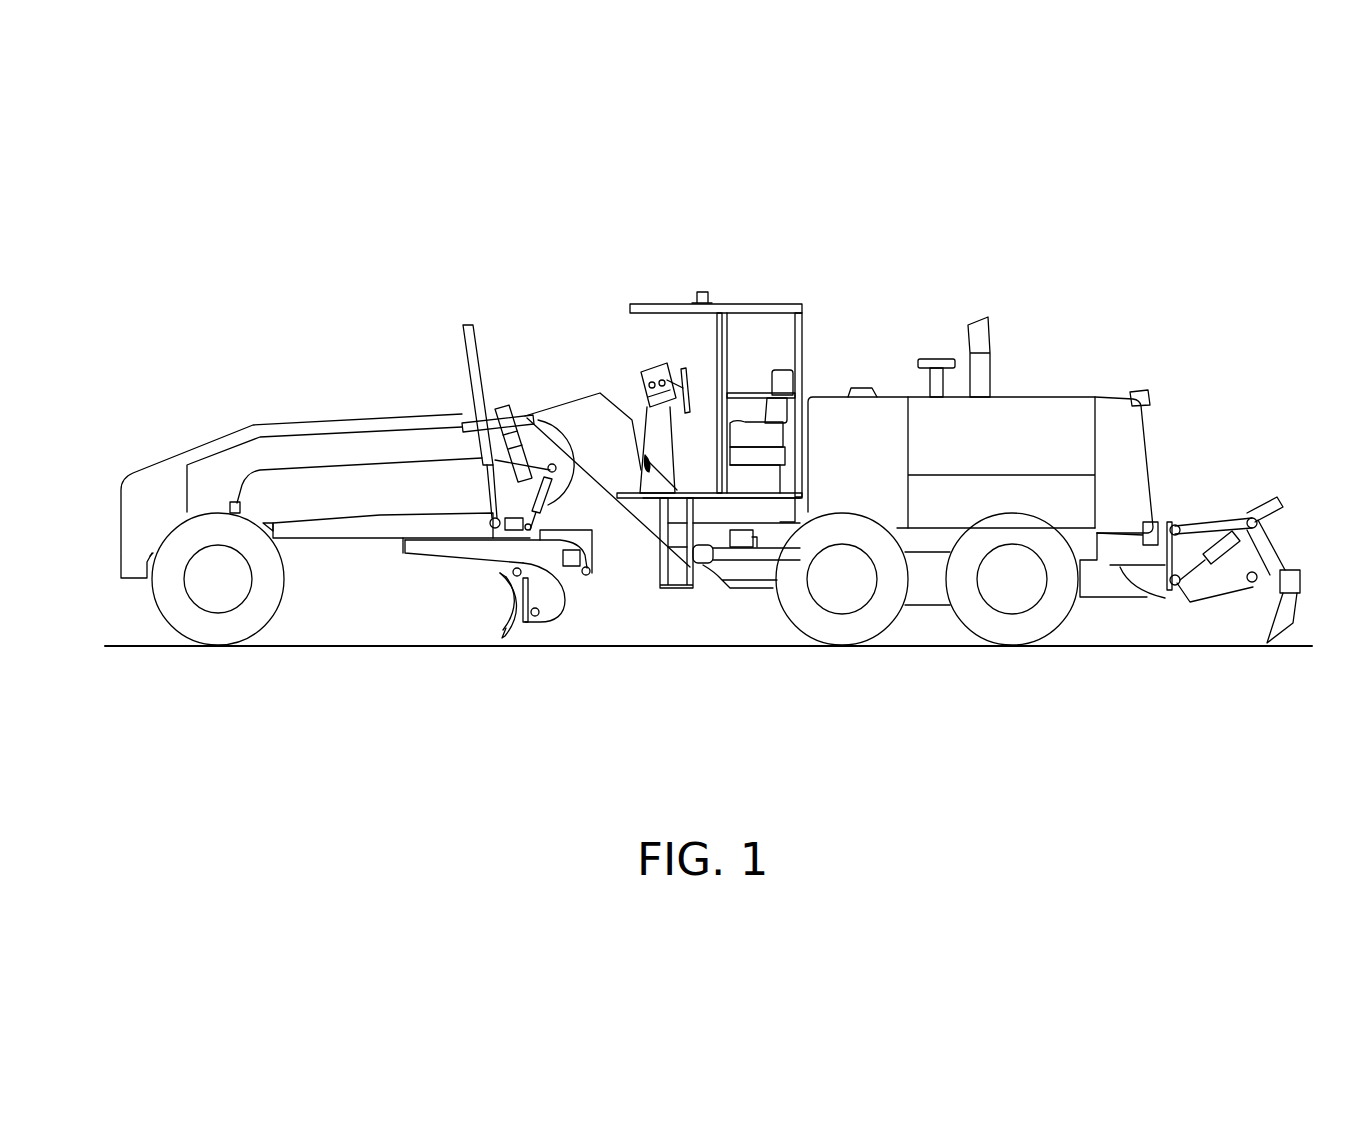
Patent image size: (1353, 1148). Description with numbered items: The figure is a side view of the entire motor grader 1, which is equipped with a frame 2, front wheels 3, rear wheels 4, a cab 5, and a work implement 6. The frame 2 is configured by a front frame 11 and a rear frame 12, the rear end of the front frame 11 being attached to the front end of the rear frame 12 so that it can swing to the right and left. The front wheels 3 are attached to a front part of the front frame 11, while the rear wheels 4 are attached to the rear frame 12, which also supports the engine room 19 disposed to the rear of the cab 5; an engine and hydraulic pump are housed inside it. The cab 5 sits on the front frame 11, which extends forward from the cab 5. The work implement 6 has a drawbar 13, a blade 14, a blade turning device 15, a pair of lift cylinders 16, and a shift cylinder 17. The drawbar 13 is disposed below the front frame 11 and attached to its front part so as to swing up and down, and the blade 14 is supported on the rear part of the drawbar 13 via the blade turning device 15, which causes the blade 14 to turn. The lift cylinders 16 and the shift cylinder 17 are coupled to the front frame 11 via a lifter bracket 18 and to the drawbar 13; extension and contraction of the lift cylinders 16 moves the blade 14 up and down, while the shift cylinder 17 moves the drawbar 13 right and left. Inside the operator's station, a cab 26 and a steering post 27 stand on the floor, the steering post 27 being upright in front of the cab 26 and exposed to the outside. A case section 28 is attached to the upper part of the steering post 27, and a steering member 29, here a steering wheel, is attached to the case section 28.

The motor grader 1 is at (560, 200).
The frame 2 is at (713, 597).
The front wheels 3 is at (218, 638).
The rear wheels 4 is at (845, 640).
The cab 5 is at (778, 300).
The work implement 6 is at (405, 567).
The front frame 11 is at (345, 424).
The rear frame 12 is at (930, 590).
The drawbar 13 is at (315, 532).
The blade 14 is at (507, 600).
The blade turning device 15 is at (433, 547).
The lift cylinders 16 is at (470, 323).
The shift cylinder 17 is at (586, 450).
The lifter bracket 18 is at (500, 404).
The engine room 19 is at (1033, 420).
The cab 26 is at (783, 368).
The steering post 27 is at (639, 500).
The case section 28 is at (644, 367).
The steering member 29 is at (688, 376).